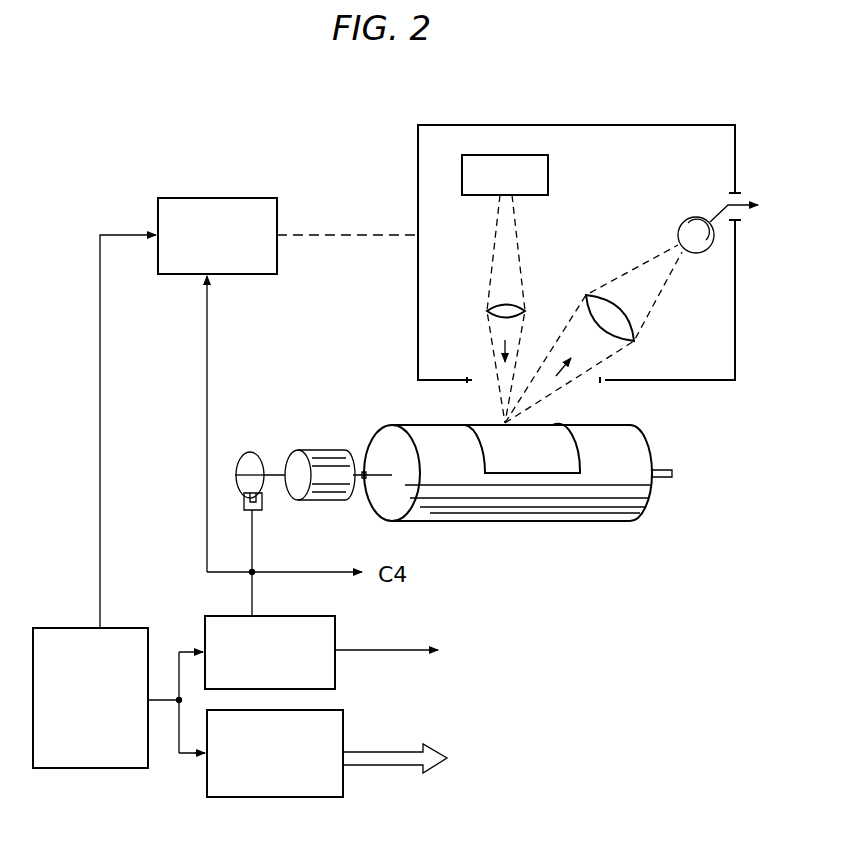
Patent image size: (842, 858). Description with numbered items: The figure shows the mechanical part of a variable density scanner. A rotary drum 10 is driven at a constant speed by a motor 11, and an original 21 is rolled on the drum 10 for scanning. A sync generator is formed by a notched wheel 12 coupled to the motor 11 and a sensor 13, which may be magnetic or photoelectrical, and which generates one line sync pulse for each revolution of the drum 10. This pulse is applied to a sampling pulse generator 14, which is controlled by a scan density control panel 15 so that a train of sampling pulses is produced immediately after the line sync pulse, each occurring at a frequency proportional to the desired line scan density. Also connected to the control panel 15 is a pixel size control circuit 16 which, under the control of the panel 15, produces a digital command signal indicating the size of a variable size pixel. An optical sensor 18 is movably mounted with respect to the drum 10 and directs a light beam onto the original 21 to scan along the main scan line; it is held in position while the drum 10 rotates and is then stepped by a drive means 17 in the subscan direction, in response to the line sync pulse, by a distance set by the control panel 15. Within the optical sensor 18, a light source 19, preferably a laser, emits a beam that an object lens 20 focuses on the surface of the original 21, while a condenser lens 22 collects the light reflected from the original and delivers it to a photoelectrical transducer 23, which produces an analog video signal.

The rotary drum 10 is at (565, 522).
The motor 11 is at (318, 452).
The notched wheel 12 is at (249, 458).
The sensor 13 is at (262, 508).
The sampling pulse generator 14 is at (335, 625).
The scan density control panel 15 is at (125, 628).
The pixel size control circuit 16 is at (343, 730).
The drive means 17 is at (235, 198).
The optical sensor 18 is at (462, 125).
The light source 19 is at (548, 167).
The object lens 20 is at (524, 308).
The original 21 is at (580, 450).
The condenser lens 22 is at (633, 320).
The photoelectrical transducer 23 is at (678, 232).